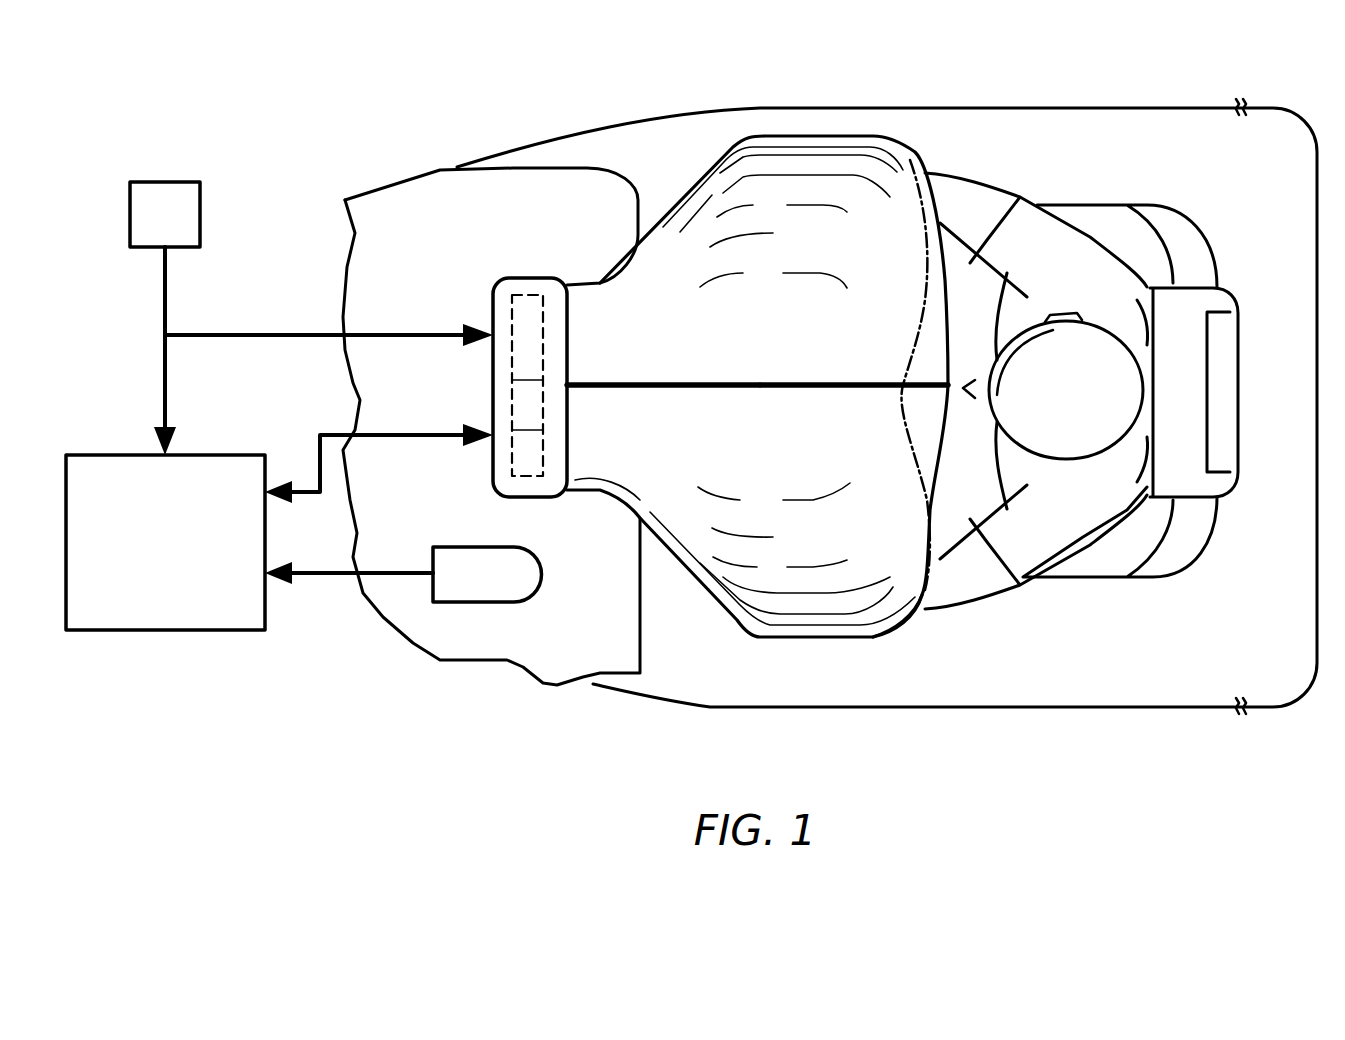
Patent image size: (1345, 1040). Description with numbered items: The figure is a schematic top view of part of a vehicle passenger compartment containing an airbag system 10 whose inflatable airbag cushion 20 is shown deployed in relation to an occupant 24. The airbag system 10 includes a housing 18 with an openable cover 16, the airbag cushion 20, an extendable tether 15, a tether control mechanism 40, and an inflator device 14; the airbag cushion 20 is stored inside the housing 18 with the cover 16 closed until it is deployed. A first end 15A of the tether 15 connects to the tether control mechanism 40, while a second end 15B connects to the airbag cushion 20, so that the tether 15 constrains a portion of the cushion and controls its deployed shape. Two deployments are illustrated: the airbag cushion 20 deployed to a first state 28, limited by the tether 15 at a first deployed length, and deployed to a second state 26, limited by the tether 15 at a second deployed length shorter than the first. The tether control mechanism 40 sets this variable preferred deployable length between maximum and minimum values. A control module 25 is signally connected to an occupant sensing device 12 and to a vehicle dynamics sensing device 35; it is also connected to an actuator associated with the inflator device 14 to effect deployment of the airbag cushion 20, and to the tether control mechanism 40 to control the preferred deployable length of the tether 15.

The airbag system 10 is at (665, 177).
The occupant sensing device 12 is at (483, 588).
The inflator device 14 is at (510, 412).
The extendable tether 15 is at (800, 390).
The first end of the tether 15A is at (586, 376).
The second end of the tether 15B is at (927, 375).
The openable cover 16 is at (505, 427).
The housing 18 is at (493, 305).
The airbag cushion 20 is at (923, 610).
The occupant 24 is at (1083, 270).
The control module 25 is at (279, 438).
The second state 26 is at (901, 172).
The first state 28 is at (961, 187).
The vehicle dynamics sensing device 35 is at (165, 214).
The tether control mechanism 40 is at (510, 390).